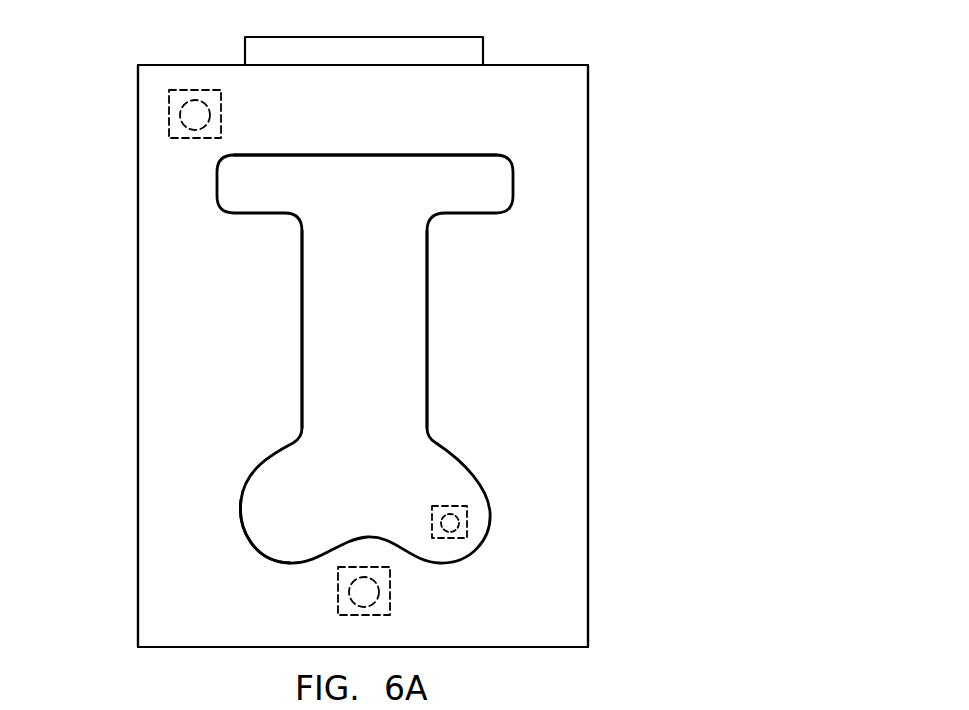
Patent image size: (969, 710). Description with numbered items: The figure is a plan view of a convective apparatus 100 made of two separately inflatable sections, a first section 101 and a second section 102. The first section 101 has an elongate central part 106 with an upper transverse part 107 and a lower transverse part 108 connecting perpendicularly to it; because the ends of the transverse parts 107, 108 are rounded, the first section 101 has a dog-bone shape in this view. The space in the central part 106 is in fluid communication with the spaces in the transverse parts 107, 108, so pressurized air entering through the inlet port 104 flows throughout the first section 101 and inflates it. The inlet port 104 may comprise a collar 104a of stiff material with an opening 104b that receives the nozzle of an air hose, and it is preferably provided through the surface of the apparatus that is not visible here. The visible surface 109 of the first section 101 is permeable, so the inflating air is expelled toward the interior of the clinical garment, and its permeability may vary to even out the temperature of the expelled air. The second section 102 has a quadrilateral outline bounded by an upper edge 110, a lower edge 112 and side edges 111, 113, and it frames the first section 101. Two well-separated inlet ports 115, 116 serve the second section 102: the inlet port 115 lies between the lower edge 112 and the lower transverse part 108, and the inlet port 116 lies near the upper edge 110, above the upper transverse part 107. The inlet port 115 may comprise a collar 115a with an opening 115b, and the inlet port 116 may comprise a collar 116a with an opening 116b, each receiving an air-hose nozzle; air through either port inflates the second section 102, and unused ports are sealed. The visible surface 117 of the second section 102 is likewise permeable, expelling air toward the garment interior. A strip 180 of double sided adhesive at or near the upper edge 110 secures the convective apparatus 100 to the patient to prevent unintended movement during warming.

The convective apparatus 100 is at (635, 181).
The first section 101 is at (428, 287).
The second section 102 is at (572, 257).
The inlet port 104 is at (450, 505).
The collar 104a is at (433, 508).
The opening 104b is at (467, 523).
The central part 106 is at (303, 352).
The upper transverse part 107 is at (515, 172).
The lower transverse part 108 is at (248, 547).
The permeable surface 109 is at (365, 340).
The upper edge 110 is at (167, 64).
The side edge 111 is at (138, 322).
The lower edge 112 is at (535, 647).
The side edge 113 is at (588, 322).
The inlet port 115 is at (390, 587).
The collar 115a is at (387, 612).
The opening 115b is at (352, 583).
The inlet port 116 is at (203, 90).
The collar 116a is at (221, 118).
The opening 116b is at (190, 126).
The permeable surface 117 is at (543, 398).
The strip of double sided adhesive 180 is at (272, 36).